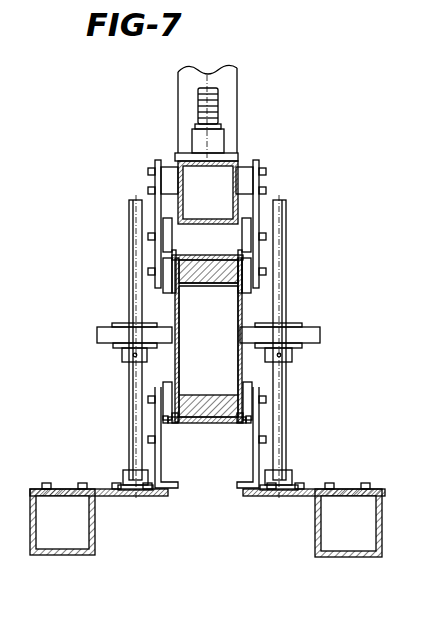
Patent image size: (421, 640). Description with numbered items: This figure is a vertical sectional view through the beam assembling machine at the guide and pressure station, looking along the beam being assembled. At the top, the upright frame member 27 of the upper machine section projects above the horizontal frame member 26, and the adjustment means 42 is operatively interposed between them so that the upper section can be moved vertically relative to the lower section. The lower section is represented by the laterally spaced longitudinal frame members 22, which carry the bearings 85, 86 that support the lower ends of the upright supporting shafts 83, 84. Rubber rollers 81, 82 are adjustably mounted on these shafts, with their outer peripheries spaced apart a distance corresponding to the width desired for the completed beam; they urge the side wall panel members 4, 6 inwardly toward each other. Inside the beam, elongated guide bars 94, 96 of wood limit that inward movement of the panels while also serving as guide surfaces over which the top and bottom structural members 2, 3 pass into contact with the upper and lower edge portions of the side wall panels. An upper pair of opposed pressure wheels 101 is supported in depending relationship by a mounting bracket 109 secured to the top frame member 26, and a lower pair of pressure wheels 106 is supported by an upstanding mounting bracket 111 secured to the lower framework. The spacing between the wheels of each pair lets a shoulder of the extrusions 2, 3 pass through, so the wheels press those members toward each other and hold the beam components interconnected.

The upright frame member 27 is at (237, 72).
The adjustment means 42 is at (222, 102).
The horizontal frame member 26 is at (234, 156).
The mounting bracket 109 is at (161, 162).
The pair of pressure wheels 101 is at (157, 246).
The upright supporting shaft 84 is at (130, 266).
The upright supporting shaft 83 is at (284, 258).
The top structural member 2 is at (208, 244).
The guide bar 94 is at (193, 278).
The side wall panel member 4 is at (234, 320).
The side wall panel member 6 is at (178, 376).
The guide bar 96 is at (206, 396).
The bottom structural member 3 is at (198, 424).
The roller 81 is at (96, 336).
The roller 82 is at (305, 335).
The pair of pressure wheels 106 is at (154, 414).
The mounting bracket 111 is at (160, 482).
The bearing 86 is at (126, 476).
The bearing 85 is at (290, 476).
The horizontal frame member 22 is at (62, 554).